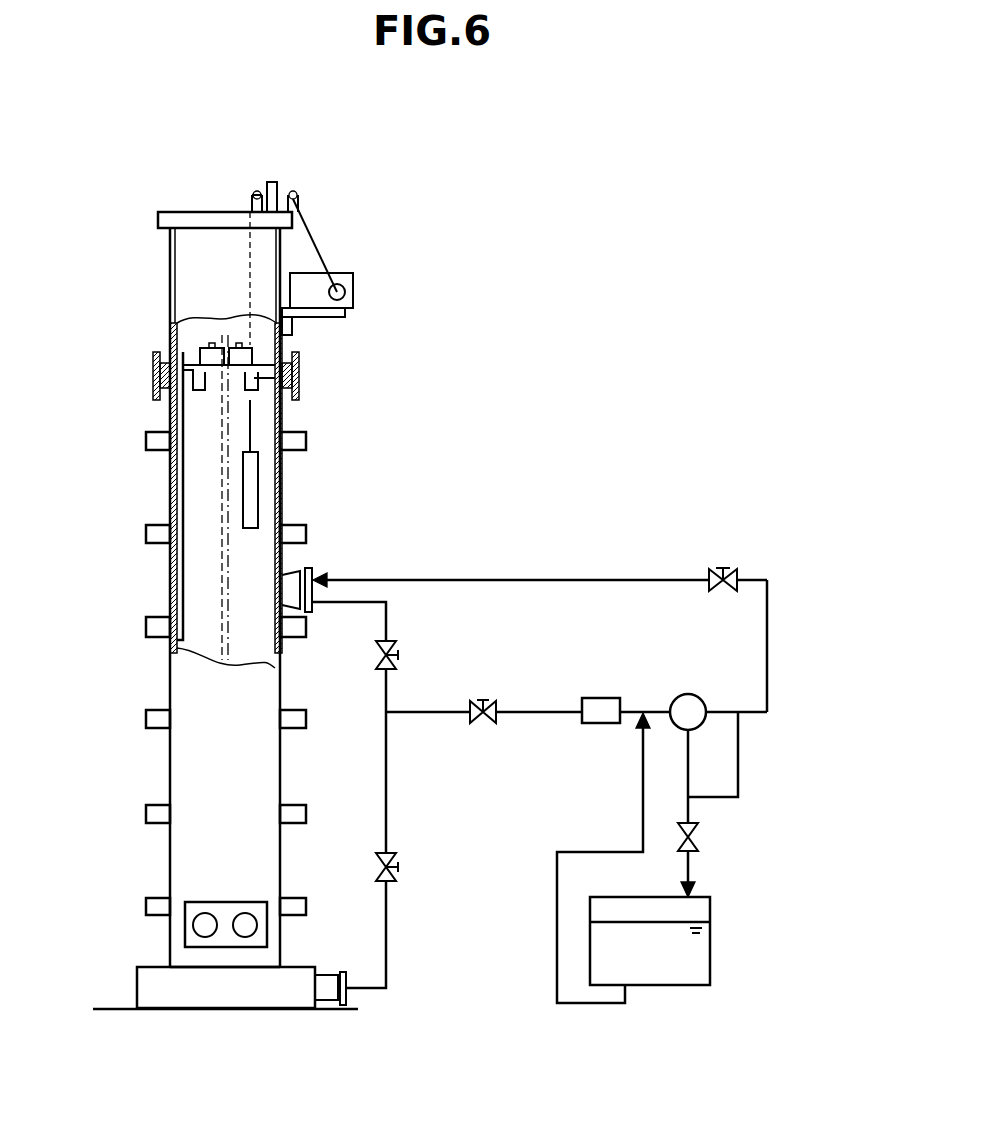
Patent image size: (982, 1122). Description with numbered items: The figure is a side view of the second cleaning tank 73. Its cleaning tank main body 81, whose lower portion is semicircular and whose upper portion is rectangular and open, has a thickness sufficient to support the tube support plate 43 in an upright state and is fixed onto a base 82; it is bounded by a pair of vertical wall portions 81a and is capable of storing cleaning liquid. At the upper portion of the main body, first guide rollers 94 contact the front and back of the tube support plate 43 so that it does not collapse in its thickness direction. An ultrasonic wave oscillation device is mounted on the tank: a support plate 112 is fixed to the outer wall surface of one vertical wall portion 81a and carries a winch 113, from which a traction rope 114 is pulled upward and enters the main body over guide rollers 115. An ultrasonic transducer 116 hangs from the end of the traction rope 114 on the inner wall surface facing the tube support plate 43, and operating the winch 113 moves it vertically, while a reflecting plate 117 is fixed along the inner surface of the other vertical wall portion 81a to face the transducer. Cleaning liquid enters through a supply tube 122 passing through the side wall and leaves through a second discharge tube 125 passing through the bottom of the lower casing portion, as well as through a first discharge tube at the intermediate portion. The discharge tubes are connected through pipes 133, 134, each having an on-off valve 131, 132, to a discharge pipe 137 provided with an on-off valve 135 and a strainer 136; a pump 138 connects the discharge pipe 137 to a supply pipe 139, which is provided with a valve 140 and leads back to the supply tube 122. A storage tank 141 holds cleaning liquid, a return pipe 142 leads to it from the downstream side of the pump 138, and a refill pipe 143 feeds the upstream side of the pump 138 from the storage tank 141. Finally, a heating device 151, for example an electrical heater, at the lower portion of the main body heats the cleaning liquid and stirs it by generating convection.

The second cleaning tank 73 is at (450, 146).
The cleaning tank main body 81 is at (162, 760).
The vertical wall portions 81a is at (170, 478).
The base 82 is at (152, 995).
The first guide rollers 94 is at (240, 358).
The support plate 112 is at (347, 316).
The winch 113 is at (355, 290).
The traction rope 114 is at (318, 237).
The guide rollers 115 is at (257, 190).
The ultrasonic transducer 116 is at (252, 492).
The reflecting plate 117 is at (170, 556).
The tube support plate 43 is at (222, 585).
The supply tube 122 is at (298, 598).
The second discharge tube 125 is at (330, 1000).
The on-off valve 131 is at (399, 658).
The on-off valve 132 is at (399, 870).
The pipe 133 is at (388, 692).
The pipe 134 is at (388, 958).
The on-off valve 135 is at (483, 725).
The strainer 136 is at (599, 697).
The discharge pipe 137 is at (538, 710).
The pump 138 is at (689, 693).
The supply pipe 139 is at (769, 645).
The valve 140 is at (728, 570).
The storage tank 141 is at (711, 950).
The return pipe 142 is at (739, 775).
The refill pipe 143 is at (595, 852).
The heating device 151 is at (228, 940).